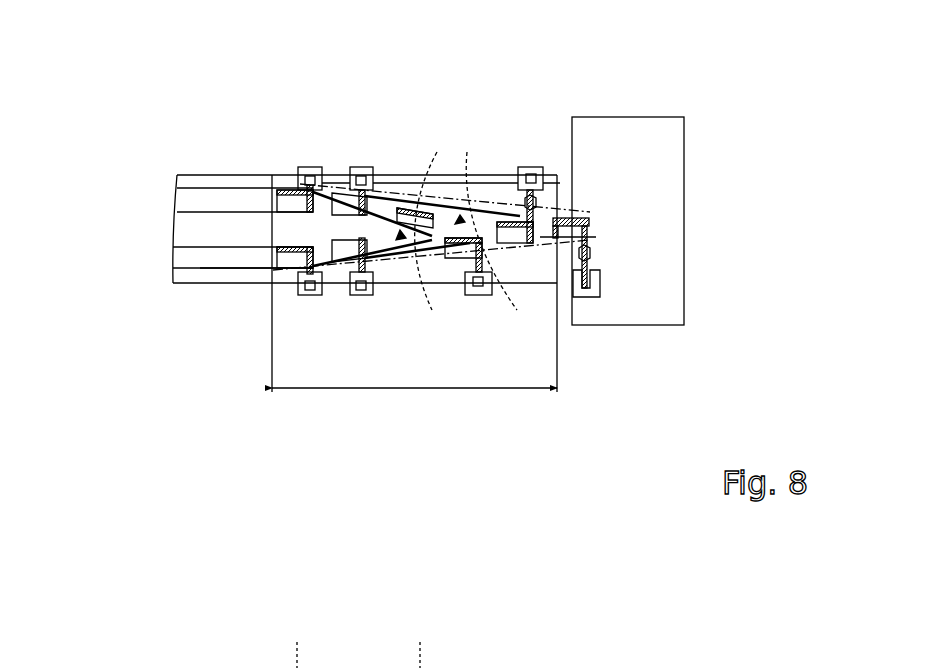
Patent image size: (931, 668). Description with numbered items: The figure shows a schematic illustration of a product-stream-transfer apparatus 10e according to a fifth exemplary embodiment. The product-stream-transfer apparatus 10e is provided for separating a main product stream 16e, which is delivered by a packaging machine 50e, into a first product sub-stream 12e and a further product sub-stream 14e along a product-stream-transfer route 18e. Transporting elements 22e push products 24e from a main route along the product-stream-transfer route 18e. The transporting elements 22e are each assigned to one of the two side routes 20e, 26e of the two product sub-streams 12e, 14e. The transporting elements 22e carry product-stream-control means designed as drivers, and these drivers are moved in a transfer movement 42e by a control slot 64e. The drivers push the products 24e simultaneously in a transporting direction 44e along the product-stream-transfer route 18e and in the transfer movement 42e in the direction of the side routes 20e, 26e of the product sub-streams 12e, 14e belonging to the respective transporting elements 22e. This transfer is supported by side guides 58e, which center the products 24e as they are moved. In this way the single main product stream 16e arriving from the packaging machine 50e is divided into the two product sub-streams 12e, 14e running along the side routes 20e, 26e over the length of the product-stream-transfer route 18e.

The product-stream-transfer apparatus 10e is at (187, 138).
The first product sub-stream 12e is at (236, 176).
The further product sub-stream 14e is at (248, 270).
The main product stream 16e is at (548, 226).
The product-stream-transfer route 18e is at (418, 392).
The side route 20e is at (197, 203).
The transporting elements 22e is at (462, 177).
The products 24e is at (350, 268).
The side route 26e is at (197, 256).
The transfer movement 42e is at (424, 278).
The transporting direction 44e is at (596, 143).
The packaging machine 50e is at (606, 130).
The side guides 58e is at (410, 178).
The control slot 64e is at (518, 278).